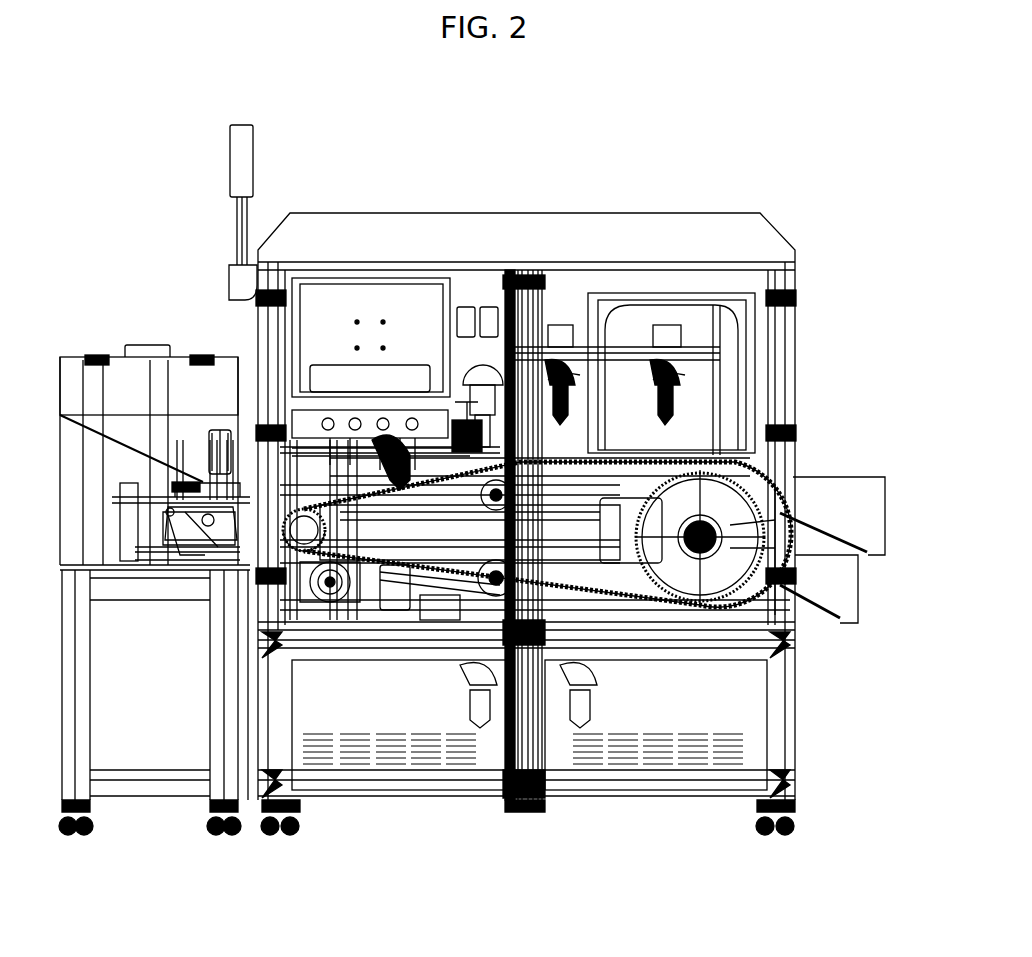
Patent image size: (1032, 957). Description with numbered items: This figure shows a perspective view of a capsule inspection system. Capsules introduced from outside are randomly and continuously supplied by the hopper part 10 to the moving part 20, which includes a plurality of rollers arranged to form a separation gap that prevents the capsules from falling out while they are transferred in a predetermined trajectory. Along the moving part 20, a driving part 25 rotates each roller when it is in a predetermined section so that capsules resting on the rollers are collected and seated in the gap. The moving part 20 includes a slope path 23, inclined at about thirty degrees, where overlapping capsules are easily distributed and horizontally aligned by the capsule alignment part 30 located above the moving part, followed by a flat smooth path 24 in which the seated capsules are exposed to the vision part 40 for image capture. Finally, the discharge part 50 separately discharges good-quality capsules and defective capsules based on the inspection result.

The hopper part 10 is at (108, 312).
The moving part 20 is at (790, 485).
The slope path 23 is at (380, 610).
The flat smooth path 24 is at (572, 500).
The driving part 25 is at (435, 600).
The capsule alignment part 30 is at (400, 392).
The vision part 40 is at (565, 318).
The discharge part 50 is at (872, 463).